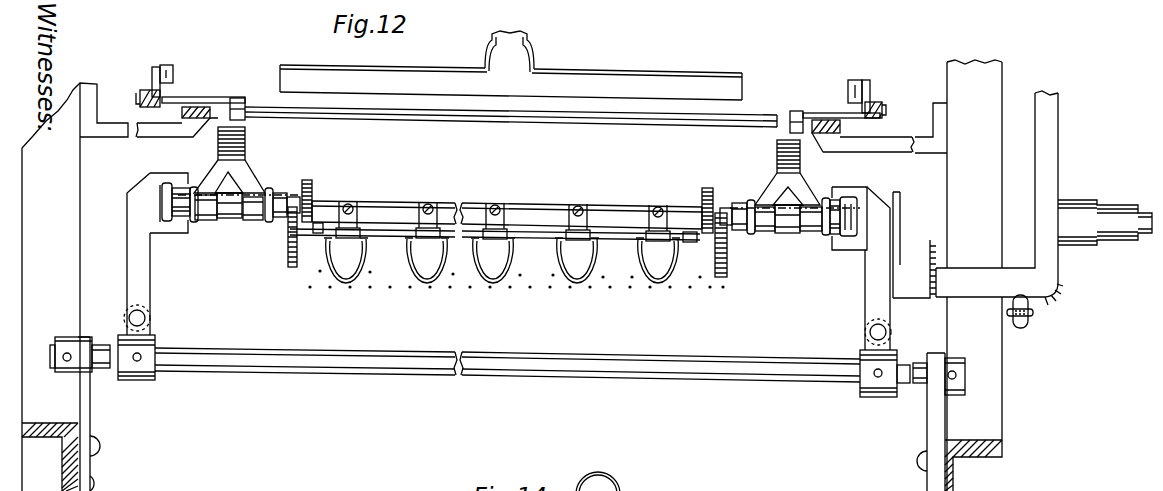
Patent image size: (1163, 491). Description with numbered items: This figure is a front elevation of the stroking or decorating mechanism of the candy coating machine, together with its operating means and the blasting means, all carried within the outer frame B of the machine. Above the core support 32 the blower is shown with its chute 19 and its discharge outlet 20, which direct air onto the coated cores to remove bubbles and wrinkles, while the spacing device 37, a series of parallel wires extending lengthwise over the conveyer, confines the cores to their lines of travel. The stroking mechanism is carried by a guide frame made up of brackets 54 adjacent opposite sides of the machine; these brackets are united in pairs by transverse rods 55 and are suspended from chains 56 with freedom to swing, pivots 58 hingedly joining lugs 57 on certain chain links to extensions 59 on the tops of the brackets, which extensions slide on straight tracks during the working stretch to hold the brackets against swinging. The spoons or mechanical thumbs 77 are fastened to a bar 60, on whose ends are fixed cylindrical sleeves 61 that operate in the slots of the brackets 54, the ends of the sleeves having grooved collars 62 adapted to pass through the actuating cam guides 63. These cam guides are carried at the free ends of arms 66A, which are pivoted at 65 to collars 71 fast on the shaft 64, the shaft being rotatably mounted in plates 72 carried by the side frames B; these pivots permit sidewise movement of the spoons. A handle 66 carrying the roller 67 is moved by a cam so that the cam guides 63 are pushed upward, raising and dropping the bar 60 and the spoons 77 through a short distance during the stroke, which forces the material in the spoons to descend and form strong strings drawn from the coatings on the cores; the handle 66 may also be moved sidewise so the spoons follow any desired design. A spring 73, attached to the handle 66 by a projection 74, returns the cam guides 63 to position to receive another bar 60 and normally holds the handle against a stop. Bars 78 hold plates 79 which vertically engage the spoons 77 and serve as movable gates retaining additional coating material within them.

The chute 19 is at (530, 50).
The discharge outlet 20 is at (727, 72).
The core support 32 is at (673, 290).
The spacing device 37 is at (603, 277).
The bracket 54 is at (250, 173).
The transverse rod 55 is at (515, 120).
The chain 56 is at (140, 90).
The lug 57 is at (157, 66).
The pivot 58 is at (173, 66).
The extension 59 is at (170, 97).
The bar 60 is at (377, 202).
The cylindrical sleeve 61 is at (227, 215).
The grooved collar 62 is at (178, 212).
The actuating guide 63 is at (153, 172).
The shaft 64 is at (273, 373).
The pivot 65 is at (148, 317).
The handle 66 is at (1059, 148).
The arm 66A is at (865, 298).
The roller 67 is at (1105, 200).
The collar 71 is at (153, 337).
The plate 72 is at (90, 417).
The spring 73 is at (1030, 312).
The projection 74 is at (1027, 328).
The spoon 77 is at (325, 252).
The bar 78 is at (603, 240).
The plate 79 is at (668, 255).
The outer frame B is at (25, 213).